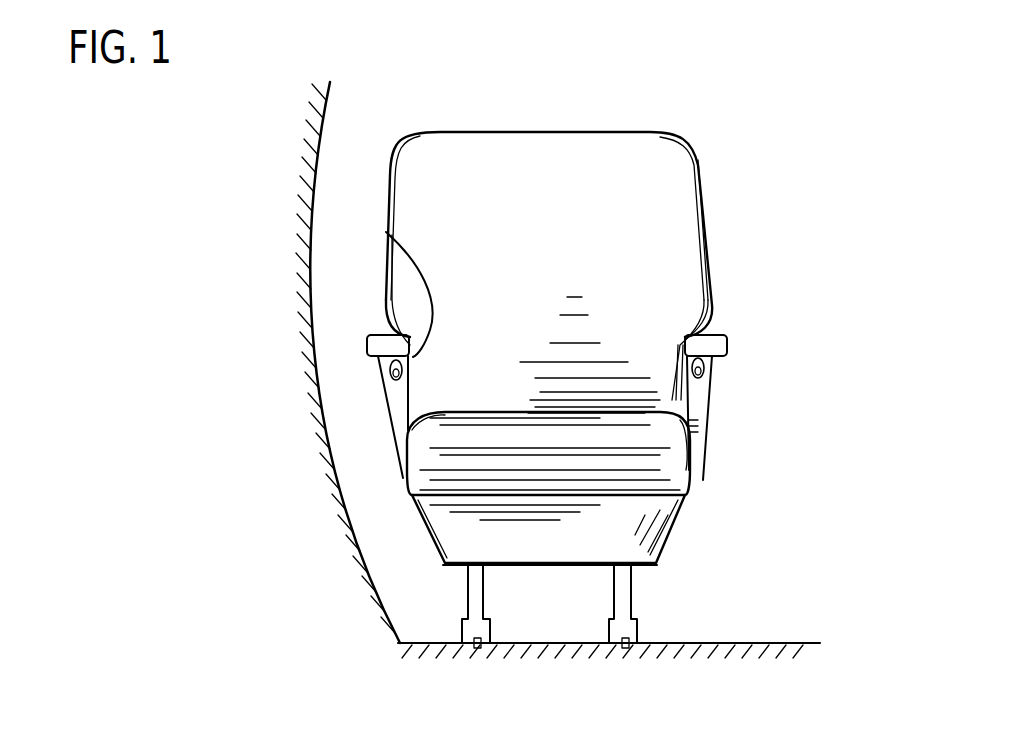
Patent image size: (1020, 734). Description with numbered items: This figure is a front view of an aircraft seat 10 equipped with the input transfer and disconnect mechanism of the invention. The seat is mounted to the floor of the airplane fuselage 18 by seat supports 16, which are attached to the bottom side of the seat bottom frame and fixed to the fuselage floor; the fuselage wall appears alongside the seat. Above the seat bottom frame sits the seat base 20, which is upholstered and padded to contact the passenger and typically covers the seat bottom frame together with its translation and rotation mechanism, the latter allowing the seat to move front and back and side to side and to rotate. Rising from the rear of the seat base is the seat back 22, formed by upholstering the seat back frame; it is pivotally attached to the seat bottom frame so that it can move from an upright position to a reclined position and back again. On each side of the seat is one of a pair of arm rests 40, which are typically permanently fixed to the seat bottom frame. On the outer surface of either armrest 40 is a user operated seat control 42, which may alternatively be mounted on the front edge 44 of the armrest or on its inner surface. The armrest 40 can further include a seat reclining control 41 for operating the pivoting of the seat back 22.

The aircraft seat 10 is at (757, 128).
The seat supports 16 is at (480, 598).
The airplane fuselage 18 is at (312, 390).
The seat base 20 is at (666, 470).
The seat back 22 is at (445, 160).
The arm rests 40 is at (370, 336).
The seat reclining control 41 is at (408, 260).
The user operated seat control 42 is at (390, 367).
The front edge 44 is at (396, 420).